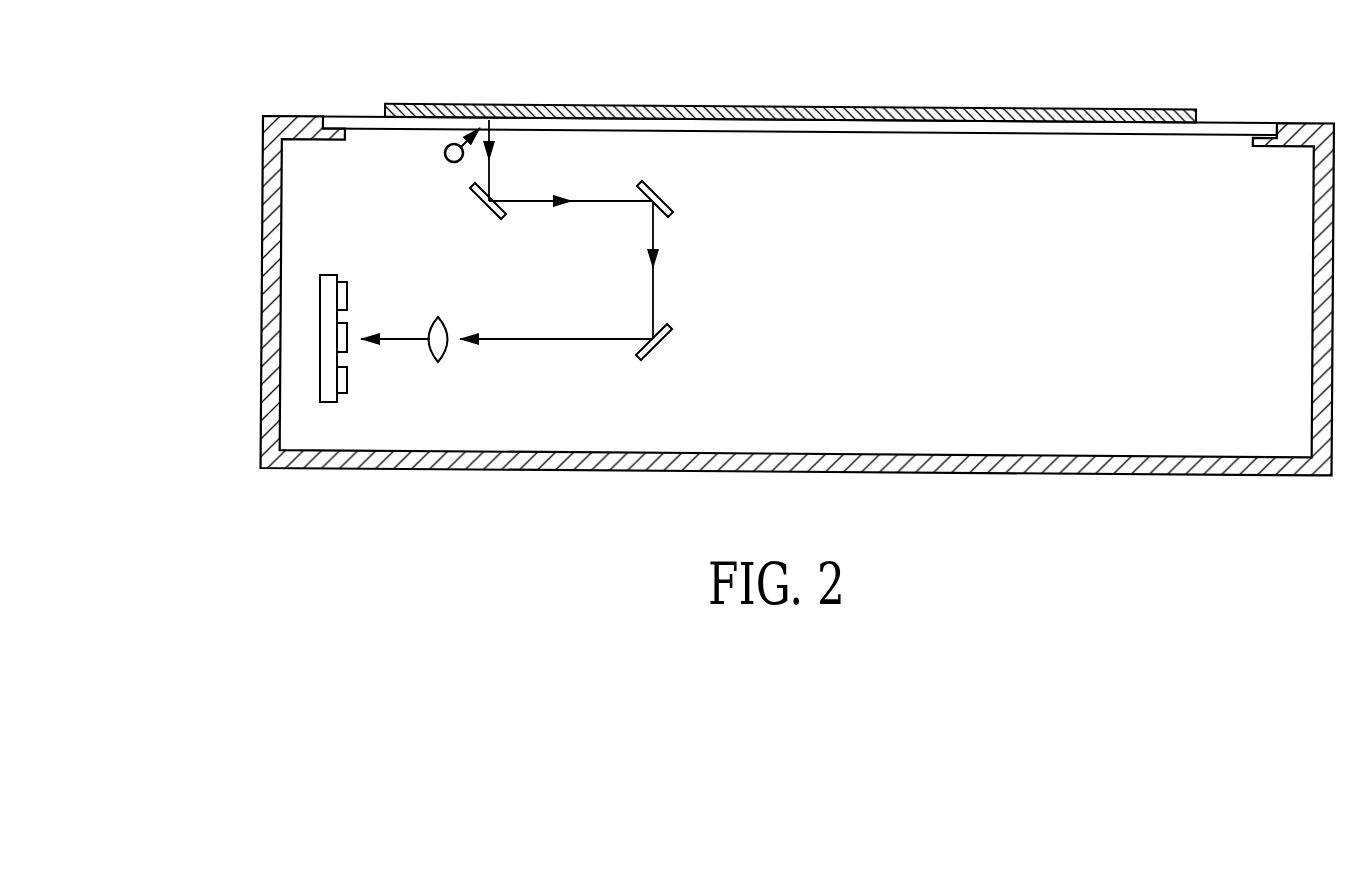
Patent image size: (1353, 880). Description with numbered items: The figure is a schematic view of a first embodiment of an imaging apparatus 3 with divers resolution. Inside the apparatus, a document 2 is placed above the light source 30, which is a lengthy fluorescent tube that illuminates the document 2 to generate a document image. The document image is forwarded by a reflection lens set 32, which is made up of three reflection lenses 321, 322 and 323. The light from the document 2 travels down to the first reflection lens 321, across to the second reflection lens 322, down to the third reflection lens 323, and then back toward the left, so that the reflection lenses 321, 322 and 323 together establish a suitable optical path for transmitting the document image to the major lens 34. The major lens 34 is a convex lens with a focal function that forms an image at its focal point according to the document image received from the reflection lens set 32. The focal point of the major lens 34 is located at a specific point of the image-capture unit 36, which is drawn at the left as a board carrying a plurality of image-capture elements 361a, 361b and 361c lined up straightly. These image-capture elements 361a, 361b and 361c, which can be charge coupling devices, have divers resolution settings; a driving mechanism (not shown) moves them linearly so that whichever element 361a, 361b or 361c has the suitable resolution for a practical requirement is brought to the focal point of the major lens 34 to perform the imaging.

The document 2 is at (818, 106).
The imaging apparatus 3 is at (214, 333).
The light source 30 is at (452, 145).
The reflection lens set 32 is at (603, 243).
The reflection lens 321 is at (475, 197).
The reflection lens 322 is at (668, 202).
The reflection lens 323 is at (663, 342).
The major lens 34 is at (443, 323).
The image-capture unit 36 is at (379, 306).
The image-capture element 361a is at (343, 285).
The image-capture element 361b is at (348, 325).
The image-capture element 361c is at (345, 385).